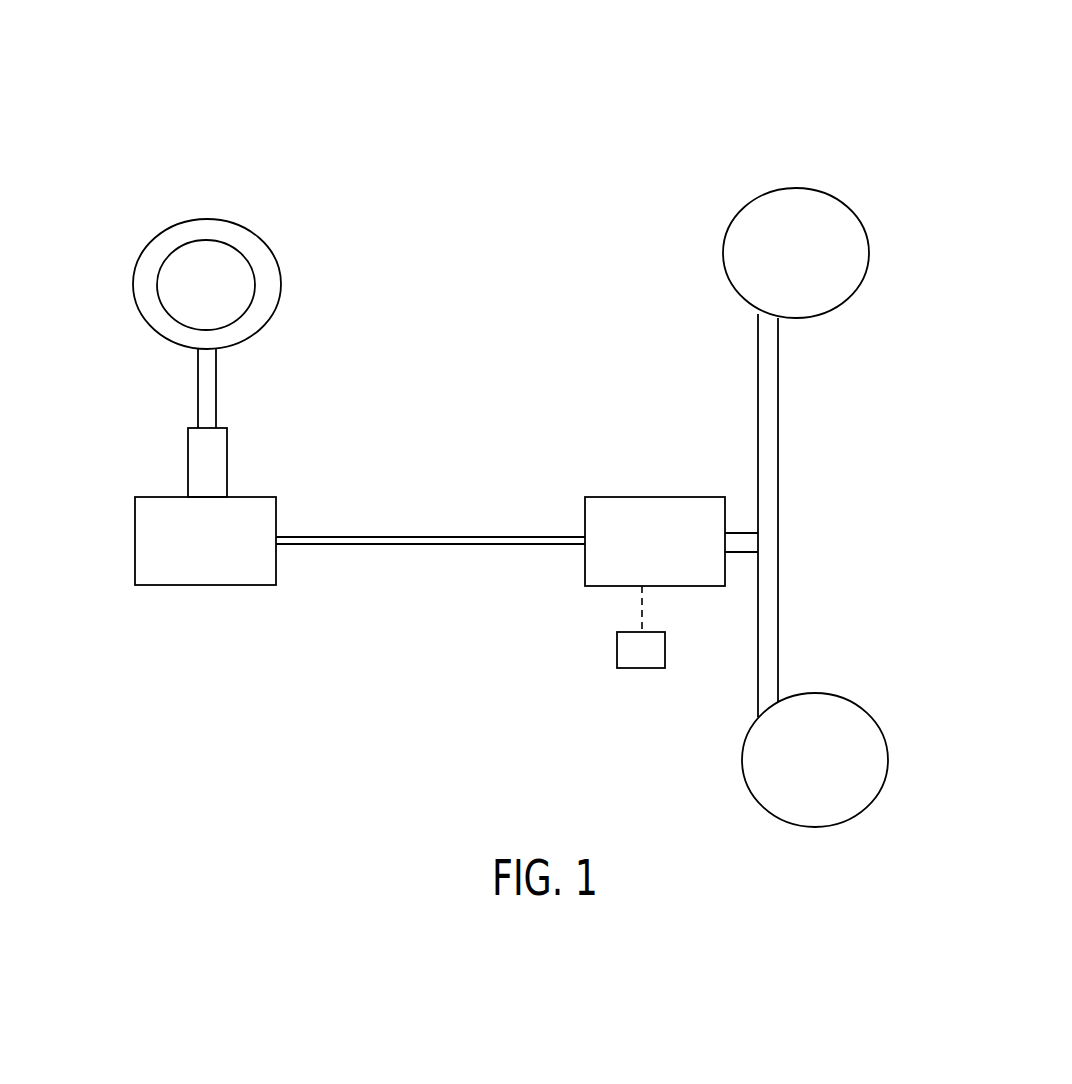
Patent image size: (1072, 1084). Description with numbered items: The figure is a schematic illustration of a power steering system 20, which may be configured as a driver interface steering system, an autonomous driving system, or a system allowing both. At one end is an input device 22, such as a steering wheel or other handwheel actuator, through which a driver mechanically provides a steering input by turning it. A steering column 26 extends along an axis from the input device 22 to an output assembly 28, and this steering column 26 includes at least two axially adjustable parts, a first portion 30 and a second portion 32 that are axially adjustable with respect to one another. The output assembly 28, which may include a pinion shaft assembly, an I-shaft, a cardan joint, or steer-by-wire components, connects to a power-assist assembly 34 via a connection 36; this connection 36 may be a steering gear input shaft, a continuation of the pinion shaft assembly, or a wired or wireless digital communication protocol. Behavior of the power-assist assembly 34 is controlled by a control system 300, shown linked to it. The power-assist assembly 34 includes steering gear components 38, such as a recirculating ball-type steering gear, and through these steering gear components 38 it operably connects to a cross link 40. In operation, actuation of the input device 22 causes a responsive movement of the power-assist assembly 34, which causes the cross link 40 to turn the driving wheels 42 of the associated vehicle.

The power steering system 20 is at (985, 187).
The input device 22 is at (158, 252).
The steering column 26 is at (88, 397).
The output assembly 28 is at (219, 556).
The first portion 30 is at (188, 392).
The second portion 32 is at (188, 486).
The power-assist assembly 34 is at (669, 556).
The connection 36 is at (563, 538).
The steering gear components 38 is at (757, 535).
The cross link 40 is at (768, 572).
The driving wheels 42 is at (838, 295).
The control system 300 is at (660, 665).